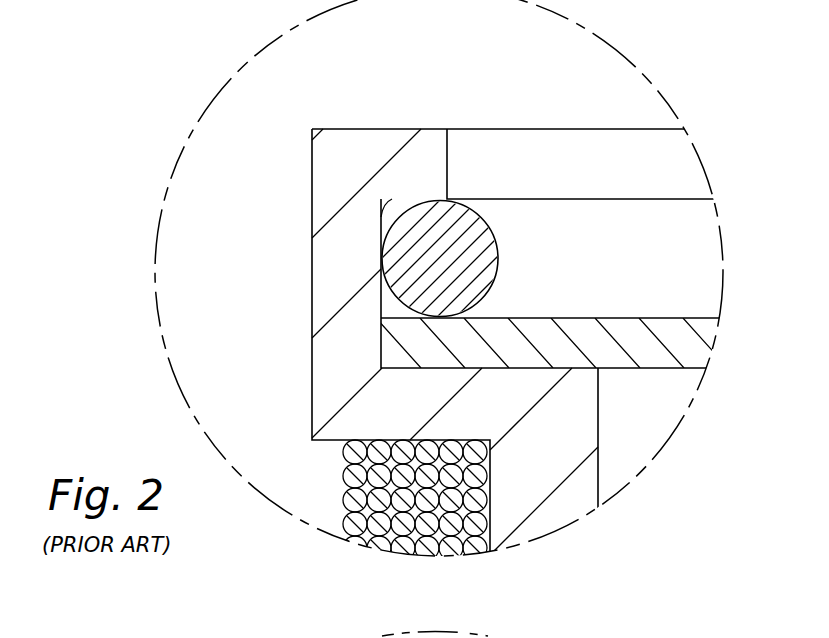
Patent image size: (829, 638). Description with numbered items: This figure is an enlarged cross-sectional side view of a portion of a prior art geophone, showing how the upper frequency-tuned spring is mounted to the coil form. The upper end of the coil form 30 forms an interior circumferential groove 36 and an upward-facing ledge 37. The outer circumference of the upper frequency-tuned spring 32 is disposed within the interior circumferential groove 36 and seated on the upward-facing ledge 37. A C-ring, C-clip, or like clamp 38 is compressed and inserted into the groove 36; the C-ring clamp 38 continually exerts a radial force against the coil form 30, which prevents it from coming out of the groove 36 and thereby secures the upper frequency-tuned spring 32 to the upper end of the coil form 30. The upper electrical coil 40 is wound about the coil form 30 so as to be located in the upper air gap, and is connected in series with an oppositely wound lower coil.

The coil form 30 is at (312, 262).
The upper frequency-tuned spring 32 is at (624, 318).
The interior circumferential groove 36 is at (383, 215).
The upward-facing ledge 37 is at (543, 368).
The C-ring clamp 38 is at (484, 222).
The upper electrical coil 40 is at (347, 476).